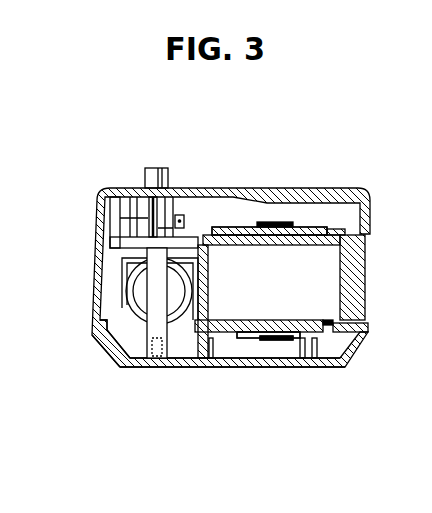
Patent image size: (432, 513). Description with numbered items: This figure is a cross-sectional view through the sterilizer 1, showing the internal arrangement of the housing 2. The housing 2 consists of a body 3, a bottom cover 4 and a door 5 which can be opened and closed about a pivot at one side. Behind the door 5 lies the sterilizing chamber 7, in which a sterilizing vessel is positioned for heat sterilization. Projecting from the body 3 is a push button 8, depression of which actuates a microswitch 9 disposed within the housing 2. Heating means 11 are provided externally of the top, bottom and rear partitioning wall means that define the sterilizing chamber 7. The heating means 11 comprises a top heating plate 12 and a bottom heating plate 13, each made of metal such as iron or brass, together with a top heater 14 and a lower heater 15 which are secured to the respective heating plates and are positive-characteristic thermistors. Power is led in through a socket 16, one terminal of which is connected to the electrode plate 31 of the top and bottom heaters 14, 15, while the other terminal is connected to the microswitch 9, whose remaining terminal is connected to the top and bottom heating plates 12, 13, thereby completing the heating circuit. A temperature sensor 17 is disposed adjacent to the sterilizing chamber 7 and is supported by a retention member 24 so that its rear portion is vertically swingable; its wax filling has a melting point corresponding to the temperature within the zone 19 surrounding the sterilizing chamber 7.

The ultrasonic transducer assembly 1 is at (92, 240).
The housing 2 is at (95, 283).
The body 3 is at (197, 232).
The bottom cover 4 is at (153, 367).
The door 5 is at (368, 307).
The sterilizing chamber 7 is at (330, 270).
The push button 8 is at (150, 168).
The microswitch 9 is at (184, 218).
The heating means 11 is at (363, 117).
The top heating plate 12 is at (323, 234).
The bottom heating plate 13 is at (235, 338).
The top heater 14 is at (303, 226).
The lower heater 15 is at (262, 339).
The socket 16 is at (130, 200).
The temperature sensor 17 is at (150, 322).
The zone 19 is at (102, 317).
The retention member 24 is at (113, 360).
The electrode plate 31 is at (280, 222).